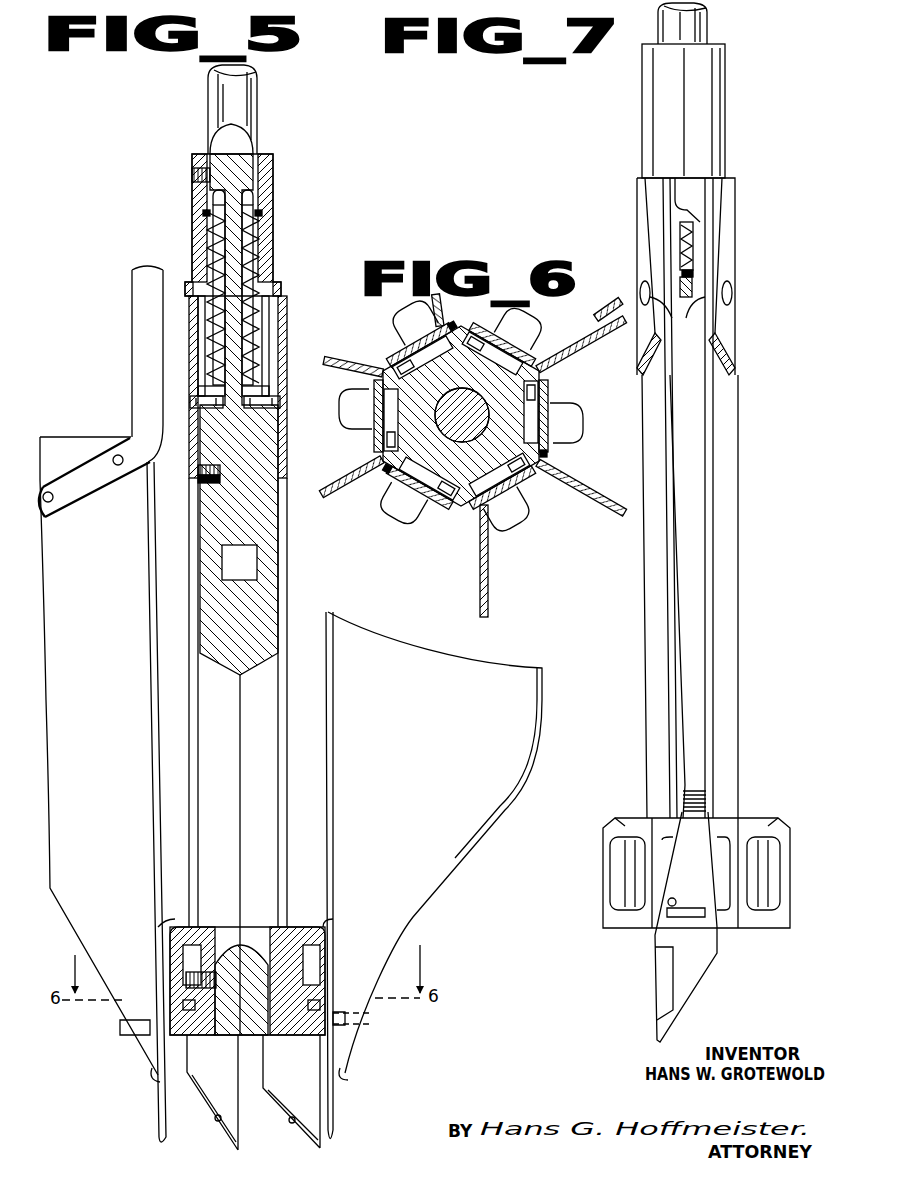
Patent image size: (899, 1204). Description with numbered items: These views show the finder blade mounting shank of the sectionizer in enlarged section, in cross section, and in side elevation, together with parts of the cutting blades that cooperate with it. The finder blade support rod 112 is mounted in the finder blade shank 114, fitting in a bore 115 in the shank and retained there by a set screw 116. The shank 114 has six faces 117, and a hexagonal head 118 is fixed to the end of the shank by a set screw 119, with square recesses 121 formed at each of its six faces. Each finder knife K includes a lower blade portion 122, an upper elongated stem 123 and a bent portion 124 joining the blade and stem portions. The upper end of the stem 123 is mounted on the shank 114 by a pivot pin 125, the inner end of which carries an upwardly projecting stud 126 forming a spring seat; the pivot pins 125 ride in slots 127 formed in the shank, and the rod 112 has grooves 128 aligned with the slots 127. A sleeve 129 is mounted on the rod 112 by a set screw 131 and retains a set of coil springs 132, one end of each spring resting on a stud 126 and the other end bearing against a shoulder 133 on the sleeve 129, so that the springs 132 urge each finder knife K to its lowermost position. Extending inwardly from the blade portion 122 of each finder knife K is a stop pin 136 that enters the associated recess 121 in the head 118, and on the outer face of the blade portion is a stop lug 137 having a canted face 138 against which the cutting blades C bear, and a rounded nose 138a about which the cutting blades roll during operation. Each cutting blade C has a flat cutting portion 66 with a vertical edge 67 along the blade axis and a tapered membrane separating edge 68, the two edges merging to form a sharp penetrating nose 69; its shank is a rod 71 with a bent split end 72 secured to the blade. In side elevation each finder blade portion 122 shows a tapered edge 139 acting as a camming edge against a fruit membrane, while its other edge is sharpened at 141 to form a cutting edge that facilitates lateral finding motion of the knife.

In FIG. 5, the flat blade or cutting portion 66 is at (291, 756).
In FIG. 6, the flat blade or cutting portion 66 is at (350, 495).
In FIG. 7, the flat blade or cutting portion 66 is at (608, 321).
In FIG. 5, the vertical edge 67 is at (330, 792).
In FIG. 5, the tapered cutting or membrane separating edge 68 is at (455, 863).
In FIG. 5, the sharp penetrating nose 69 is at (345, 1078).
In FIG. 5, the rod 71 is at (136, 305).
In FIG. 5, the bent split end 72 is at (66, 500).
In FIG. 5, the finder blade support rod 112 is at (248, 99).
In FIG. 7, the finder blade support rod 112 is at (708, 17).
In FIG. 5, the finder blade shank 114 is at (283, 552).
In FIG. 6, the finder blade shank 114 is at (461, 416).
In FIG. 7, the finder blade shank 114 is at (728, 440).
In FIG. 5, the bore 115 is at (239, 562).
In FIG. 5, the set screw 116 is at (200, 478).
In FIG. 5, the faces 117 is at (241, 855).
In FIG. 7, the faces 117 is at (722, 570).
In FIG. 5, the hexagonal head 118 is at (322, 941).
In FIG. 6, the hexagonal head 118 is at (380, 410).
In FIG. 7, the hexagonal head 118 is at (755, 818).
In FIG. 5, the set screw 119 is at (190, 978).
In FIG. 5, the square recesses 121 is at (320, 975).
In FIG. 6, the square recesses 121 is at (415, 532).
In FIG. 7, the square recesses 121 is at (755, 903).
In FIG. 5, the lower blade portion 122 is at (162, 1066).
In FIG. 7, the lower blade portion 122 is at (703, 963).
In FIG. 5, the upper elongated stem 123 is at (282, 616).
In FIG. 7, the upper elongated stem 123 is at (732, 323).
In FIG. 5, the bent portion 124 is at (305, 917).
In FIG. 7, the bent portion 124 is at (700, 797).
In FIG. 5, the pivot pin 125 is at (275, 406).
In FIG. 7, the pivot pin 125 is at (677, 306).
In FIG. 5, the upwardly projecting stud 126 is at (262, 390).
In FIG. 7, the upwardly projecting stud 126 is at (694, 273).
In FIG. 5, the slots 127 is at (281, 334).
In FIG. 7, the slots 127 is at (680, 238).
In FIG. 5, the grooves 128 is at (250, 198).
In FIG. 5, the sleeve 129 is at (266, 176).
In FIG. 7, the sleeve 129 is at (722, 118).
In FIG. 5, the set screw 131 is at (192, 174).
In FIG. 5, the coil springs 132 is at (250, 233).
In FIG. 7, the coil springs 132 is at (690, 250).
In FIG. 5, the shoulder 133 is at (258, 213).
In FIG. 5, the stop pin 136 is at (322, 1005).
In FIG. 6, the stop pin 136 is at (462, 554).
In FIG. 7, the stop pin 136 is at (674, 898).
In FIG. 5, the stop lug 137 is at (362, 1020).
In FIG. 6, the stop lug 137 is at (407, 318).
In FIG. 7, the stop lug 137 is at (675, 915).
In FIG. 6, the canted face 138 is at (570, 451).
In FIG. 6, the rounded nose 138a is at (465, 421).
In FIG. 5, the tapered edge 139 is at (292, 1121).
In FIG. 7, the tapered edge 139 is at (686, 1015).
In FIG. 7, the cutting edge 141 is at (665, 968).
In FIG. 5, the finder knife K is at (315, 1128).
In FIG. 6, the finder knife K is at (470, 512).
In FIG. 7, the finder knife K is at (695, 990).
In FIG. 5, the cutting blade C is at (440, 880).
In FIG. 6, the cutting blade C is at (492, 580).
In FIG. 7, the cutting blade C is at (598, 308).